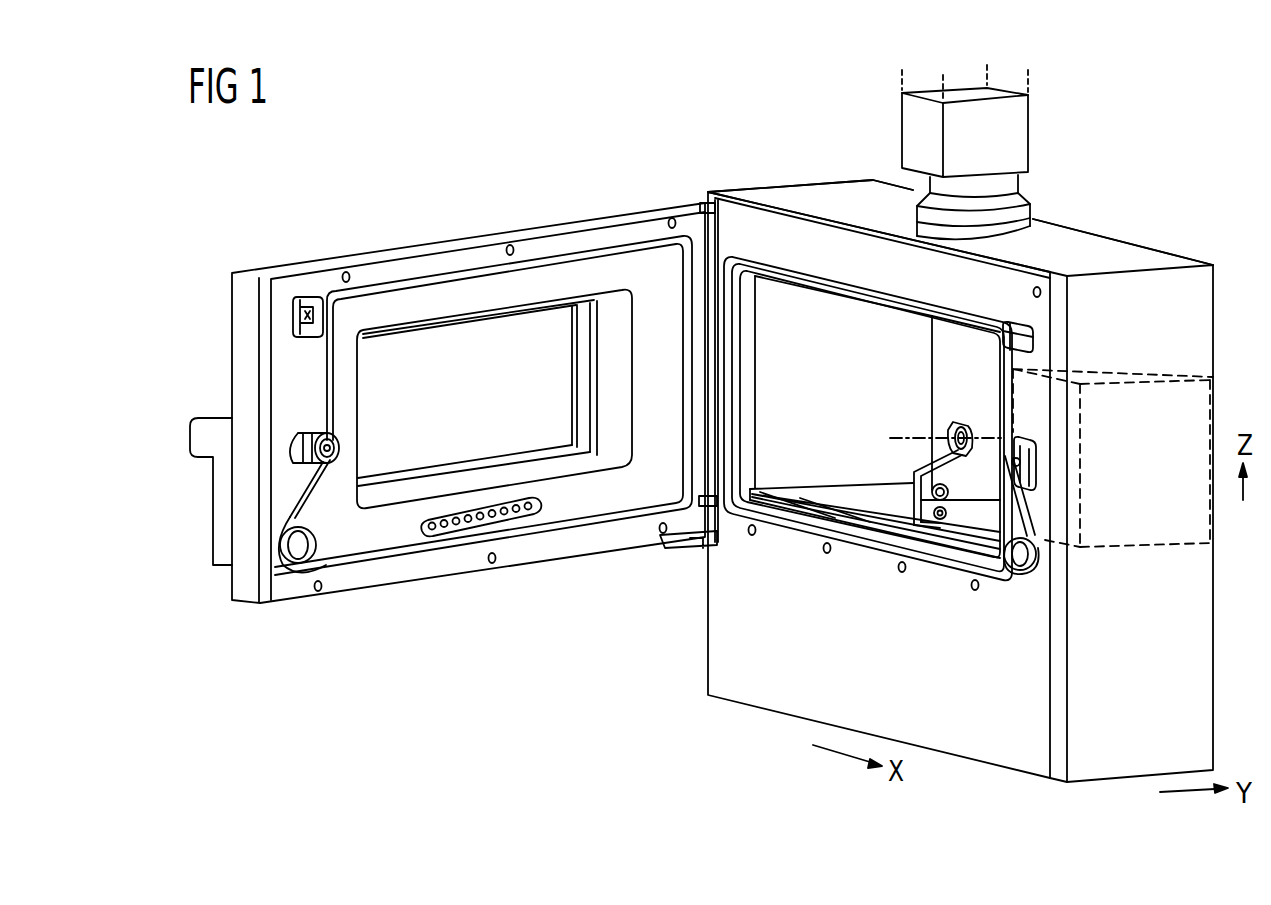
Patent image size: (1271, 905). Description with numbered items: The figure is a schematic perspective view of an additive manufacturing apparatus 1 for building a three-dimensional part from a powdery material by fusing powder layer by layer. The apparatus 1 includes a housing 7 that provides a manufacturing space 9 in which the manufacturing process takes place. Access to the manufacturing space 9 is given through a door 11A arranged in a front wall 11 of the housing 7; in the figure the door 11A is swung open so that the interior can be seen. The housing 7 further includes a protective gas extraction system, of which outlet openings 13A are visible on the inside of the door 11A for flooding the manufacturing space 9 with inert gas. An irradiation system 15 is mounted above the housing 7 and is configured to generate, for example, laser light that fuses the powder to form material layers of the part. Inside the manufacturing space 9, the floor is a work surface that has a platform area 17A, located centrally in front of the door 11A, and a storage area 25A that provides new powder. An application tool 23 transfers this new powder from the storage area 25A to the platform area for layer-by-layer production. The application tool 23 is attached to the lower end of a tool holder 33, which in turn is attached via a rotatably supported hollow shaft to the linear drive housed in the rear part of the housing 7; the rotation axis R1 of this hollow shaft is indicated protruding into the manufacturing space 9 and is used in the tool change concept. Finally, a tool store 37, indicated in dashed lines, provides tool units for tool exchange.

The additive manufacturing apparatus 1 is at (511, 718).
The housing 7 is at (1187, 198).
The manufacturing space 9 is at (815, 308).
The front wall 11 is at (835, 237).
The door 11A is at (394, 248).
The outlet openings 13A is at (508, 514).
The irradiation system 15 is at (1018, 137).
The platform area 17A is at (1000, 508).
The application tool 23 is at (973, 507).
The storage area 25A is at (903, 490).
The tool holder 33 is at (938, 476).
The tool store 37 is at (1105, 368).
The rotation axis R1 is at (896, 438).